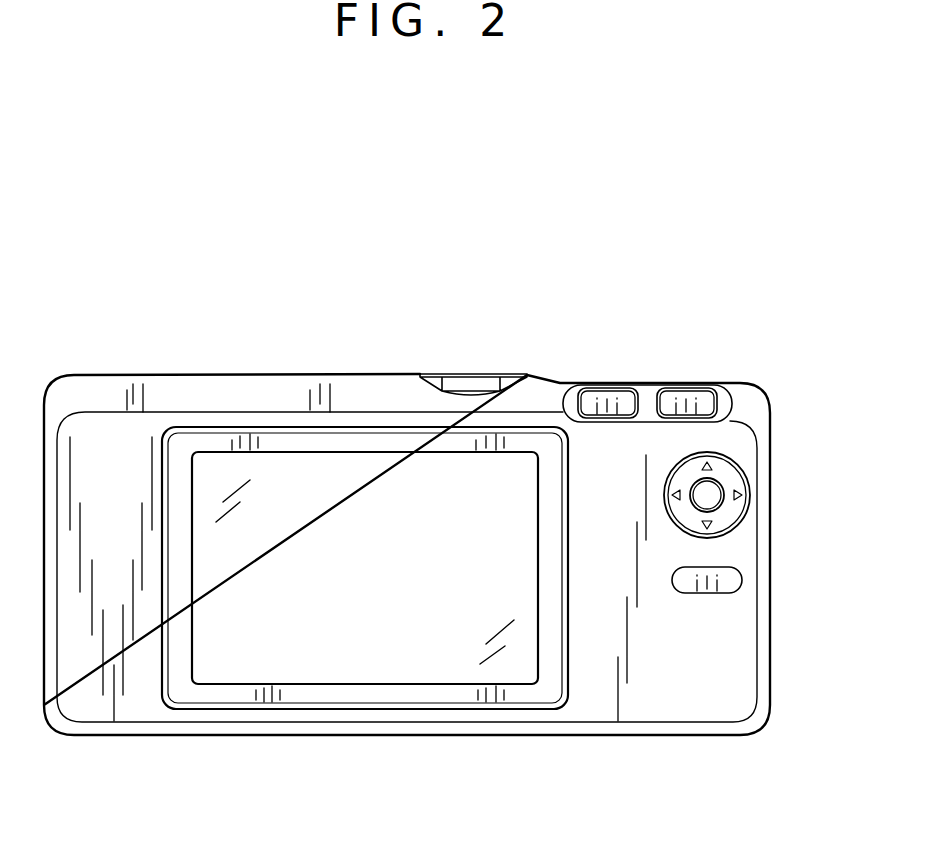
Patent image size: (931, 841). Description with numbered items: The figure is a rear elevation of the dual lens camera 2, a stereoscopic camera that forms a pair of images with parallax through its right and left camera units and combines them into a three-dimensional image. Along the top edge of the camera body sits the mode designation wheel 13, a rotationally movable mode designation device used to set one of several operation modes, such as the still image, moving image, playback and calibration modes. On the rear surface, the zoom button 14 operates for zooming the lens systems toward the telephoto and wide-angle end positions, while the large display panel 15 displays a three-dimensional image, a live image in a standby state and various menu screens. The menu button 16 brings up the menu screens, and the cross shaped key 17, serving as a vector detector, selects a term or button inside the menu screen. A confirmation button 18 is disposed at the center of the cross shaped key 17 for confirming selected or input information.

The dual lens camera 2 is at (378, 278).
The mode designation wheel 13 is at (475, 382).
The zoom button 14 is at (648, 397).
The display panel 15 is at (388, 650).
The menu button 16 is at (742, 578).
The cross shaped key 17 is at (723, 475).
The confirmation button 18 is at (710, 500).